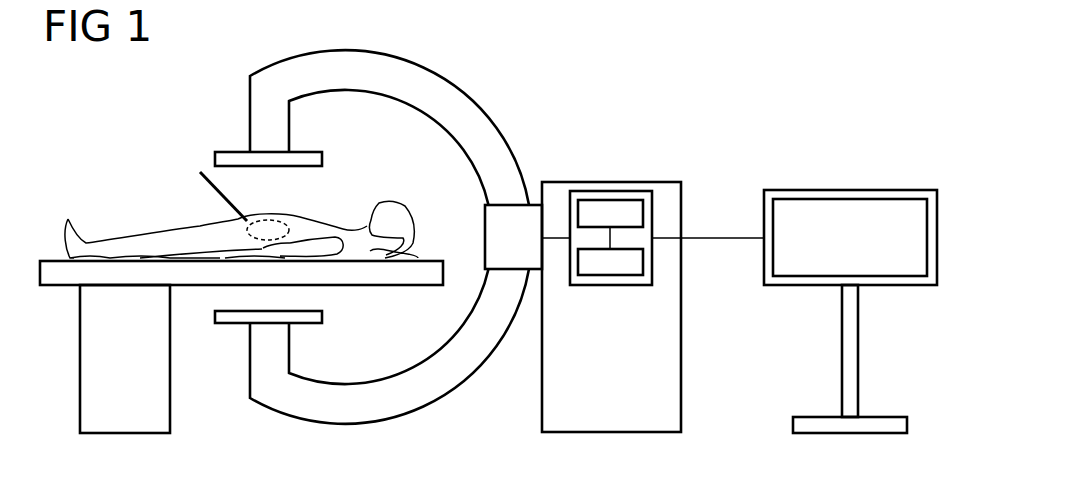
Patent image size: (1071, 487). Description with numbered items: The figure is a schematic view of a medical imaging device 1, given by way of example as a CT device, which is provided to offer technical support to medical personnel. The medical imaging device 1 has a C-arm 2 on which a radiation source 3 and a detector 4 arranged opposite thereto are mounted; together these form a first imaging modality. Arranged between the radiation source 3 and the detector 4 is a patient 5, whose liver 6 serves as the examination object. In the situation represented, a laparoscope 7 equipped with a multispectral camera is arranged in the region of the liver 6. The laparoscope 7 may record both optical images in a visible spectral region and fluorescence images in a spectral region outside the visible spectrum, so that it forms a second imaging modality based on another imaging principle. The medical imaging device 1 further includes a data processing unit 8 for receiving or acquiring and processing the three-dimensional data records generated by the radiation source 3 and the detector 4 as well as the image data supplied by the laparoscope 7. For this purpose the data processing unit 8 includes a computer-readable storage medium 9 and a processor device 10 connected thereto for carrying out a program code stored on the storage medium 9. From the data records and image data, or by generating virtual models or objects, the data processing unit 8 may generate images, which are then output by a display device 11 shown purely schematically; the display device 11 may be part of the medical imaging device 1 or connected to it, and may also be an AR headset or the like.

The medical imaging device 1 is at (560, 182).
The C-arm 2 is at (483, 107).
The radiation source 3 is at (318, 318).
The detector 4 is at (322, 165).
The patient 5 is at (153, 243).
The liver 6 is at (285, 222).
The laparoscope 7 is at (232, 185).
The data processing unit 8 is at (610, 191).
The computer-readable storage medium 9 is at (643, 262).
The processor device 10 is at (643, 207).
The display device 11 is at (853, 190).